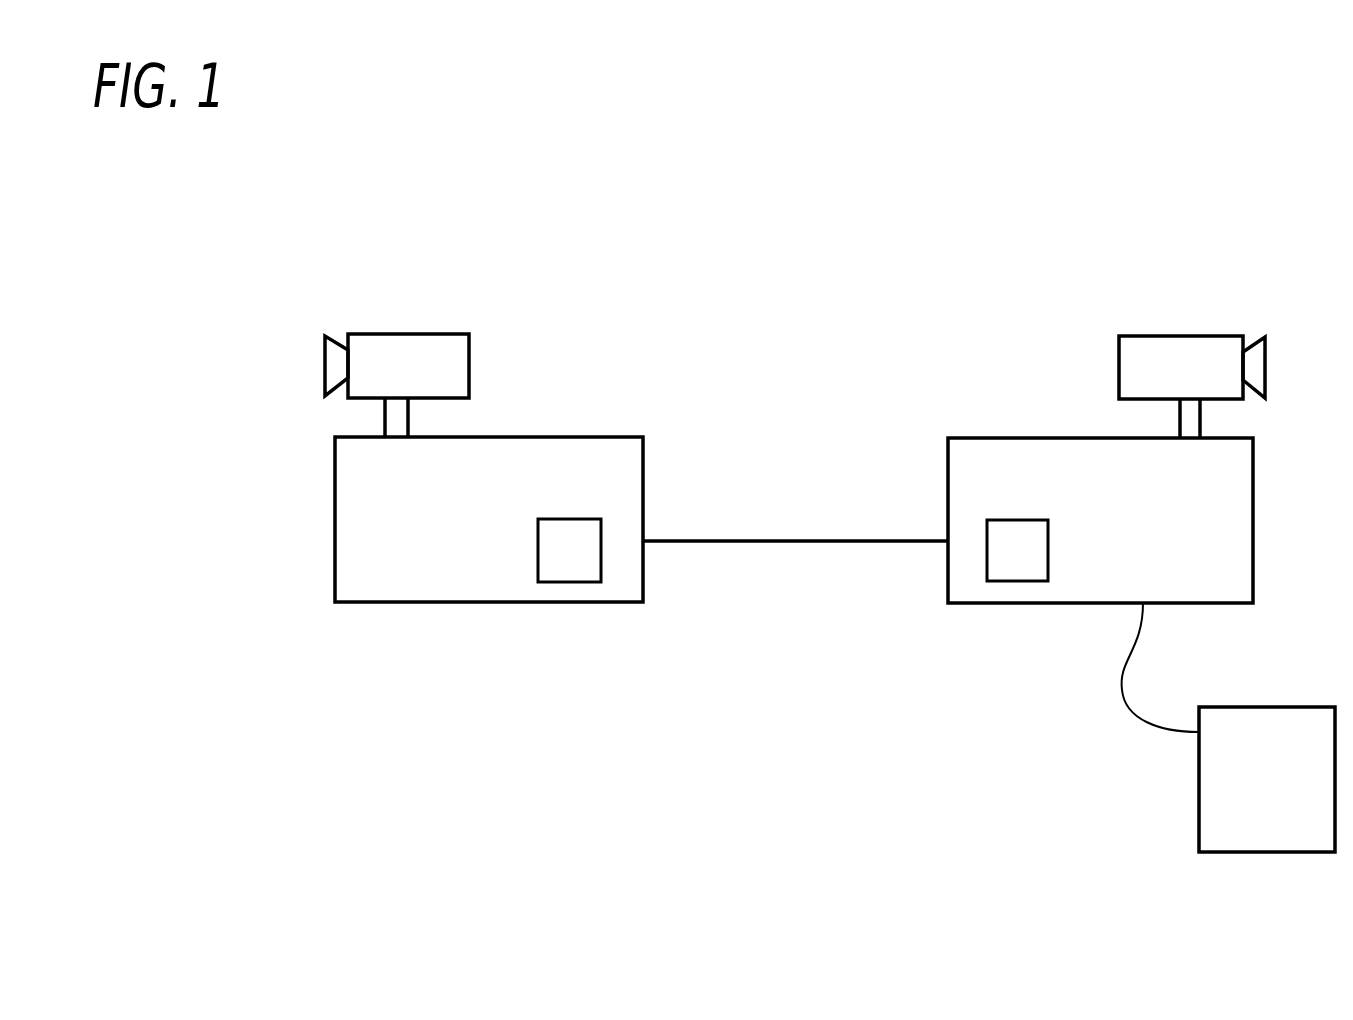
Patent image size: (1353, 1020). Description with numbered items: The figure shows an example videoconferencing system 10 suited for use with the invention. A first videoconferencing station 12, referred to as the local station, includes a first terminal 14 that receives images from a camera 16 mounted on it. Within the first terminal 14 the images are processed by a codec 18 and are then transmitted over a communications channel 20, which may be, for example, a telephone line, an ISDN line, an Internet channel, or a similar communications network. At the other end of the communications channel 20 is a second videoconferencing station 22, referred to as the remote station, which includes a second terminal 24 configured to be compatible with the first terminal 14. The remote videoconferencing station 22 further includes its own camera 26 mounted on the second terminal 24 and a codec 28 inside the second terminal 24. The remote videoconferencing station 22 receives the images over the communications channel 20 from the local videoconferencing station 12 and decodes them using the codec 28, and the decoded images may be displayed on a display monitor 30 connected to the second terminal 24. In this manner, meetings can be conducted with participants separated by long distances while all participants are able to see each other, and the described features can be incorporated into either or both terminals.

The videoconferencing system 10 is at (612, 198).
The first videoconferencing station 12 is at (568, 318).
The first terminal 14 is at (587, 437).
The camera 16 is at (402, 332).
The first encoder/decoder module 18 is at (578, 518).
The communications channel 20 is at (800, 538).
The second videoconferencing station 22 is at (1035, 322).
The second terminal 24 is at (982, 438).
The camera 26 is at (1202, 335).
The codec 28 is at (1033, 518).
The display monitor 30 is at (1198, 787).